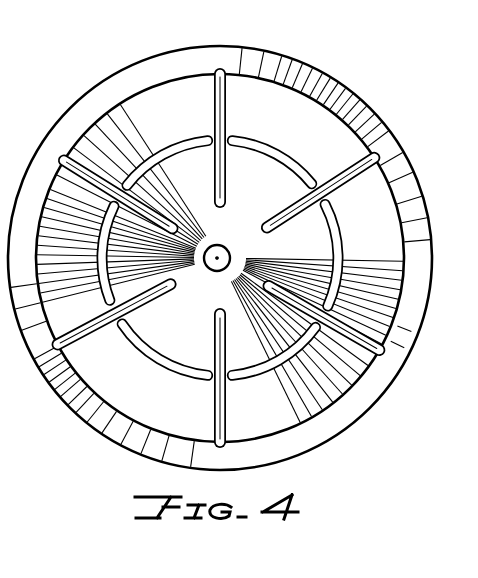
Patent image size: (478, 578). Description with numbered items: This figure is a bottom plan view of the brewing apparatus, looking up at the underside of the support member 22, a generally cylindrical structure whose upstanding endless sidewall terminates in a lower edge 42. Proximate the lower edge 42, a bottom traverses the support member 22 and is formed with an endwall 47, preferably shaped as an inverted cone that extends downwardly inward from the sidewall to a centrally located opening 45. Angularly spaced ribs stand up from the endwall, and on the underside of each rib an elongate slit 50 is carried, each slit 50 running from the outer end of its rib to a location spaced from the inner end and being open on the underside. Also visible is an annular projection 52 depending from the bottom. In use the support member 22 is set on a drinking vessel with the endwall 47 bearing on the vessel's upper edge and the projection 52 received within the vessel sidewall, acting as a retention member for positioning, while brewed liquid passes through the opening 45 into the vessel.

The support member 22 is at (348, 84).
The lower edge 42 is at (73, 399).
The opening 45 is at (227, 251).
The endwall 47 is at (337, 380).
The elongate slit 50 is at (374, 163).
The annular projection 52 is at (178, 376).